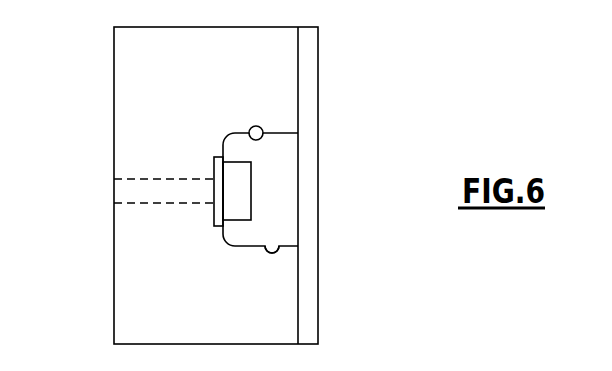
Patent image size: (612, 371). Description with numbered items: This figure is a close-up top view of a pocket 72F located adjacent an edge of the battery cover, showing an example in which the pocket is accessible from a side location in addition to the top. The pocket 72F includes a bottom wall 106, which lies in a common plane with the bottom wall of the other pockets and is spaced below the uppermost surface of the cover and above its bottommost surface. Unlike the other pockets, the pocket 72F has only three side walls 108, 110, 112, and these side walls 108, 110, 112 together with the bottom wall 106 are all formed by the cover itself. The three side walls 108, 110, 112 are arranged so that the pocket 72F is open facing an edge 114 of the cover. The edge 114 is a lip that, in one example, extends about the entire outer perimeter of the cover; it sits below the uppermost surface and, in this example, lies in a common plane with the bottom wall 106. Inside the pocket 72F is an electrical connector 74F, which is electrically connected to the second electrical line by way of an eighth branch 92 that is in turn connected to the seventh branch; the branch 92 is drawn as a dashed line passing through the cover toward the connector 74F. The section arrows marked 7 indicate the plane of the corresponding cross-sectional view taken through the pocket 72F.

The eighth branch 92 is at (148, 188).
The bottom wall 106 is at (285, 215).
The side wall 108 is at (266, 247).
The side wall 110 is at (236, 136).
The side wall 112 is at (252, 137).
The edge 114 is at (310, 193).
The pocket 72F is at (287, 173).
The electrical connector 74F is at (232, 173).
The section line 7- 7 is at (340, 92).